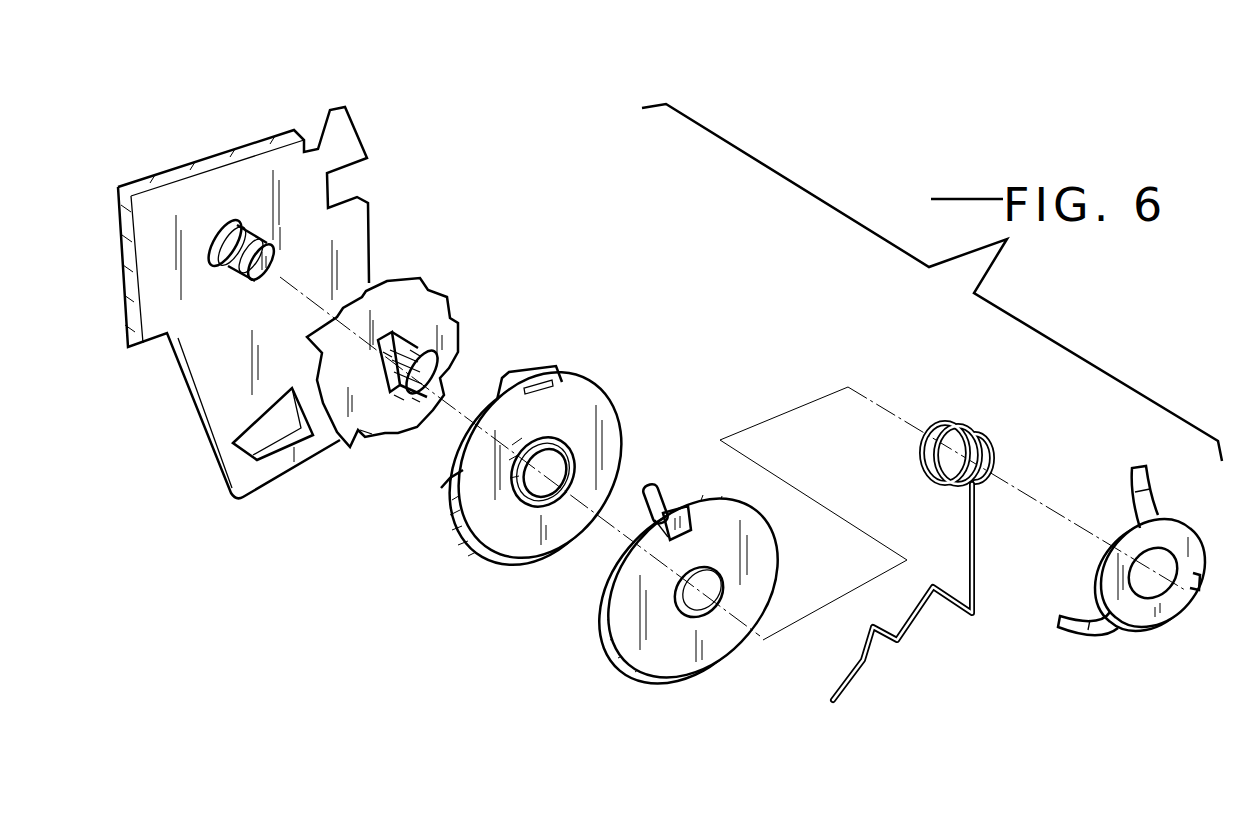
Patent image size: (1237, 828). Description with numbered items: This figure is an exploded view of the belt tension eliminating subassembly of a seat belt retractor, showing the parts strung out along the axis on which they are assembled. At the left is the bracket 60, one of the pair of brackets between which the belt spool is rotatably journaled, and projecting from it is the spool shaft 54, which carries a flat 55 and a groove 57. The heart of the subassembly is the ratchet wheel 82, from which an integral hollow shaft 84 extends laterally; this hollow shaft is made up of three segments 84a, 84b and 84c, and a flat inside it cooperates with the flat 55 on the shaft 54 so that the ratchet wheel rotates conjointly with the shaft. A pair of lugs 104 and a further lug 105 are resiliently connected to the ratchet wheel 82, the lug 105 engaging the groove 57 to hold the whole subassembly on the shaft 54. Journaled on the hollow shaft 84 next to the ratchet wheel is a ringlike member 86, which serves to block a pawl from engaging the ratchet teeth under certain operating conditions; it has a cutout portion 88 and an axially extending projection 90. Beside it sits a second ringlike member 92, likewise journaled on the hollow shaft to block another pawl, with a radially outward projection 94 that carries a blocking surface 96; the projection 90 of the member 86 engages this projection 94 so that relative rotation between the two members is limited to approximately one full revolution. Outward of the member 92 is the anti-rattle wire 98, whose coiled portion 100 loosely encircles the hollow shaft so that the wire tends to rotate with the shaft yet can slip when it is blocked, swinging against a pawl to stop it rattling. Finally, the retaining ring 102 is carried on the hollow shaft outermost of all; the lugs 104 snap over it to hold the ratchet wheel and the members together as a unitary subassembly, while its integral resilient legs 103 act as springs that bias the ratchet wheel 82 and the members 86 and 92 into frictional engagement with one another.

The shaft 54 is at (224, 270).
The flat 55 is at (278, 258).
The groove 57 is at (258, 240).
The bracket 60 is at (235, 175).
The ratchet wheel 82 is at (423, 297).
The hollow shaft 84 is at (453, 367).
The shaft segment 84a is at (445, 357).
The shaft segment 84b is at (383, 357).
The shaft segment 84c is at (394, 408).
The ringlike member 86 is at (610, 417).
The cutout portion 88 is at (452, 471).
The axially extending projection 90 is at (553, 373).
The ringlike member 92 is at (733, 537).
The projection 94 is at (666, 496).
The blocking surface 96 is at (660, 528).
The anti-rattle member or wire 98 is at (917, 617).
The coiled portion 100 is at (947, 423).
The retaining ring 102 is at (1105, 570).
The resilient elements or legs 103 is at (1155, 494).
The lugs 104 is at (420, 352).
The lug 105 is at (370, 432).